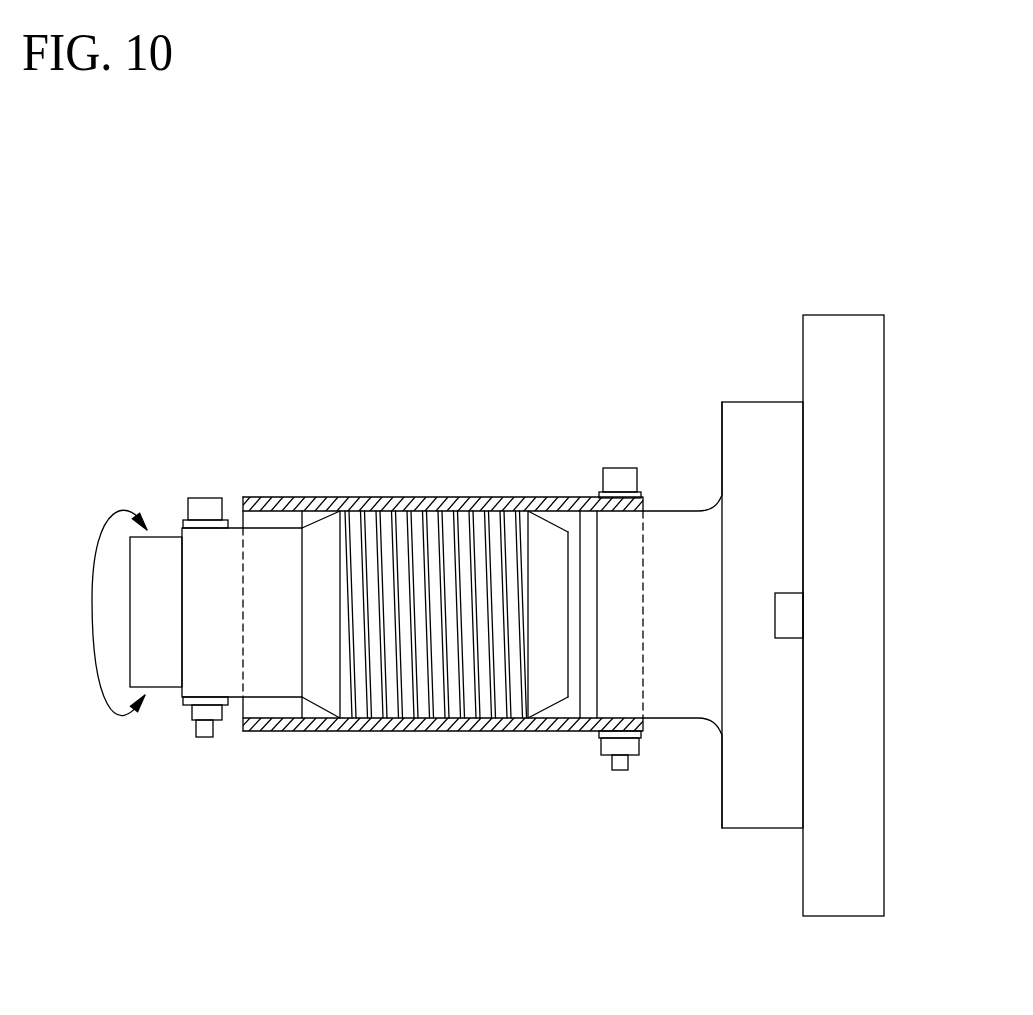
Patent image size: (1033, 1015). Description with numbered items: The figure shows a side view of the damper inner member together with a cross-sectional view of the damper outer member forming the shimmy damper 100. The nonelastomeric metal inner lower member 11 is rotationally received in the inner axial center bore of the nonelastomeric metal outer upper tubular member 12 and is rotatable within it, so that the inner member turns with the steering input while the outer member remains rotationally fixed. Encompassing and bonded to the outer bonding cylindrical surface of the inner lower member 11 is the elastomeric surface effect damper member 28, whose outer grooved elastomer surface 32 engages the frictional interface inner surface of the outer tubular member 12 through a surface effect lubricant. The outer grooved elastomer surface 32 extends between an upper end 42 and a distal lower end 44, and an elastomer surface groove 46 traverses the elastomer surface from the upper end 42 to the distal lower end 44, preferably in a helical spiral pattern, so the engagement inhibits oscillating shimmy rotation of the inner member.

The shimmy damper 100 is at (215, 284).
The nonelastomeric inner lower member 11 is at (222, 568).
The nonelastomeric outer upper tubular member 12 is at (522, 490).
The elastomeric surface effect damper member 28 is at (364, 496).
The outer grooved elastomer surface 32 is at (483, 731).
The upper end 42 is at (558, 718).
The distal lower end 44 is at (279, 731).
The elastomer surface groove 46 is at (468, 497).